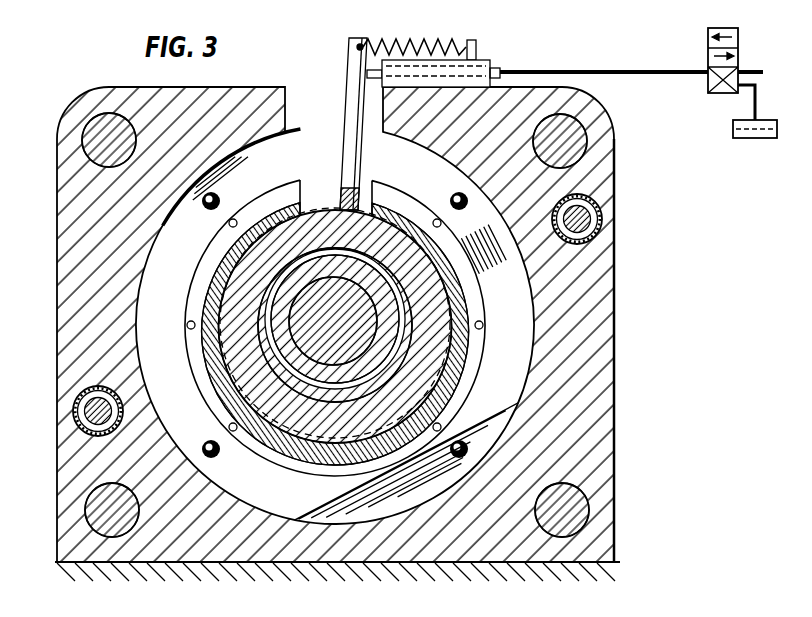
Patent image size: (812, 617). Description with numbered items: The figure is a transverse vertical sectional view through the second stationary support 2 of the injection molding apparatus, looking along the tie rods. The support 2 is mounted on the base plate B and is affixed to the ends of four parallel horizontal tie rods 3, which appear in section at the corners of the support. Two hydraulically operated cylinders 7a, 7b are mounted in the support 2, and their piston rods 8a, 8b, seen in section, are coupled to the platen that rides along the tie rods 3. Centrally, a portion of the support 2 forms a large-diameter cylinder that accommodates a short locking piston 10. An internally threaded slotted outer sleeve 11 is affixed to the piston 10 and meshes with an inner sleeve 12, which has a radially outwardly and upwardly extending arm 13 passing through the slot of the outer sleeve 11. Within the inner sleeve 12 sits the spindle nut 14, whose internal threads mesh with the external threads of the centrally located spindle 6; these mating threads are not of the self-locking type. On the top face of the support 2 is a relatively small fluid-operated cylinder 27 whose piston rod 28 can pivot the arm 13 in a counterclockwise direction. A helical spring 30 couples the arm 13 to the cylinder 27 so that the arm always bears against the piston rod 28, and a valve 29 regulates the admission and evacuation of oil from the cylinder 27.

The second stationary support 2 is at (600, 303).
The tie rods 3 is at (84, 136).
The spindle 6 is at (378, 330).
The hydraulically operated cylinder 7a is at (596, 210).
The piston rod 8a is at (578, 221).
The hydraulically operated cylinder 7b is at (80, 403).
The piston rod 8b is at (88, 415).
The locking piston 10 is at (415, 152).
The outer sleeve 11 is at (205, 257).
The inner sleeve 12 is at (222, 302).
The arm 13 is at (351, 63).
The spindle nut 14 is at (282, 357).
The fluid-operated cylinder 27 is at (479, 61).
The piston rod 28 is at (375, 34).
The valve 29 is at (708, 47).
The helical spring 30 is at (437, 46).
The base plate B is at (168, 568).